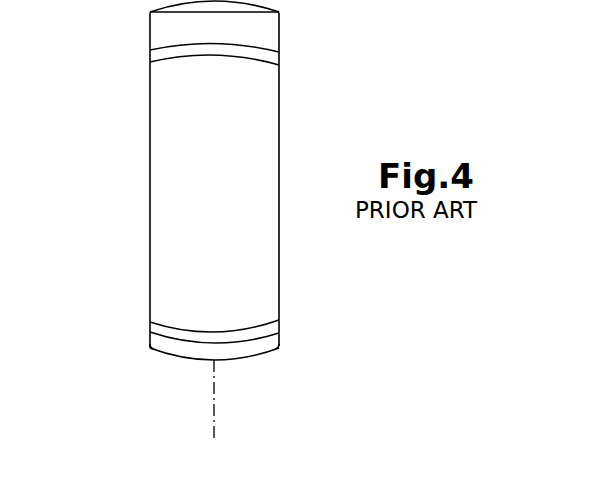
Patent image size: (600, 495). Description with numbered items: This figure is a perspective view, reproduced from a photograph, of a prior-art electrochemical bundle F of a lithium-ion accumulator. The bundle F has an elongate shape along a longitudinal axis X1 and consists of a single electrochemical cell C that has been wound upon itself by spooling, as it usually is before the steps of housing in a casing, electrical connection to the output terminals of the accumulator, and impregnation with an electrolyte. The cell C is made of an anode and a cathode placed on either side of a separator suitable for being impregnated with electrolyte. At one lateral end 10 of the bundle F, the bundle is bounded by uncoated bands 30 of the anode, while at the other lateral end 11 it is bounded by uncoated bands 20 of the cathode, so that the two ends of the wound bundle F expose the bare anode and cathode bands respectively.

The lateral end of the bundle 10 is at (313, 77).
The other lateral end of the bundle 11 is at (297, 345).
The uncoated bands of cathode 20 is at (160, 343).
The uncoated bands of anode 30 is at (165, 30).
The electrochemical cell C is at (220, 185).
The longitudinal axis X1 is at (213, 418).
The electrochemical bundle F is at (130, 223).